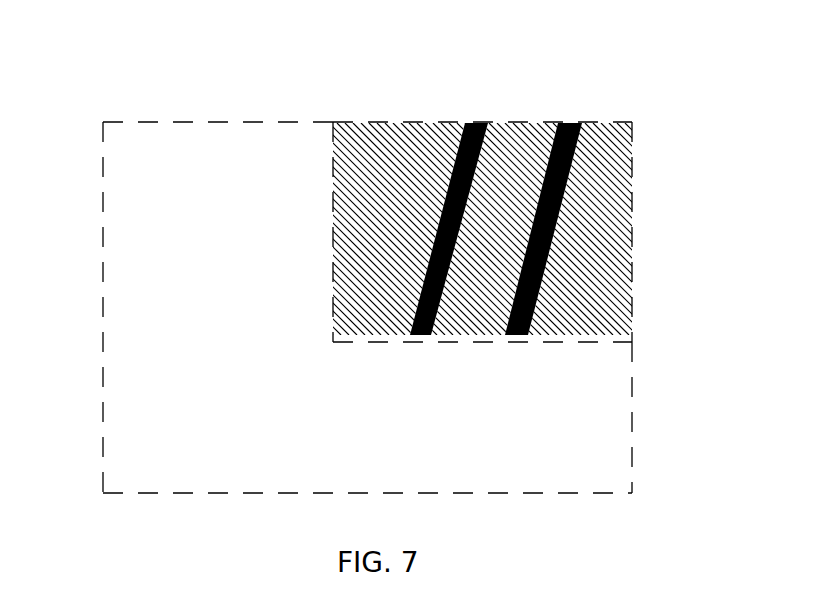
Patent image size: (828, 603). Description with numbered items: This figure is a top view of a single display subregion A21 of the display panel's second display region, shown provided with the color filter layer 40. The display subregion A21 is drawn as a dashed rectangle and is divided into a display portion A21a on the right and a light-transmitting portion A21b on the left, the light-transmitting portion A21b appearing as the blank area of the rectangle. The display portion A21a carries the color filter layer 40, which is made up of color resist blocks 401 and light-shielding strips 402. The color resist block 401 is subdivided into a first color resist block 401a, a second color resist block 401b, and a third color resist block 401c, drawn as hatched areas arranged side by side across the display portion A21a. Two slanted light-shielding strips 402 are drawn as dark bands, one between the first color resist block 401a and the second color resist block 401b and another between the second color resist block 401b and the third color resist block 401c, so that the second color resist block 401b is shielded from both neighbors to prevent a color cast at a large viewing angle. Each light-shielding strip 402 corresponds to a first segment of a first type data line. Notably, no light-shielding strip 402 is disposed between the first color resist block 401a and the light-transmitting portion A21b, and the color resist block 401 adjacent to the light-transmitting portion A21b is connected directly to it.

The display subregion A21 is at (563, 70).
The display portion A21a is at (392, 120).
The light-transmitting portion A21b is at (215, 119).
The color filter layer 40 is at (470, 252).
The color resist block 401 is at (470, 285).
The first color resist block 401a is at (353, 336).
The second color resist block 401b is at (473, 336).
The third color resist block 401c is at (598, 336).
The light-shielding strip 402 is at (420, 336).